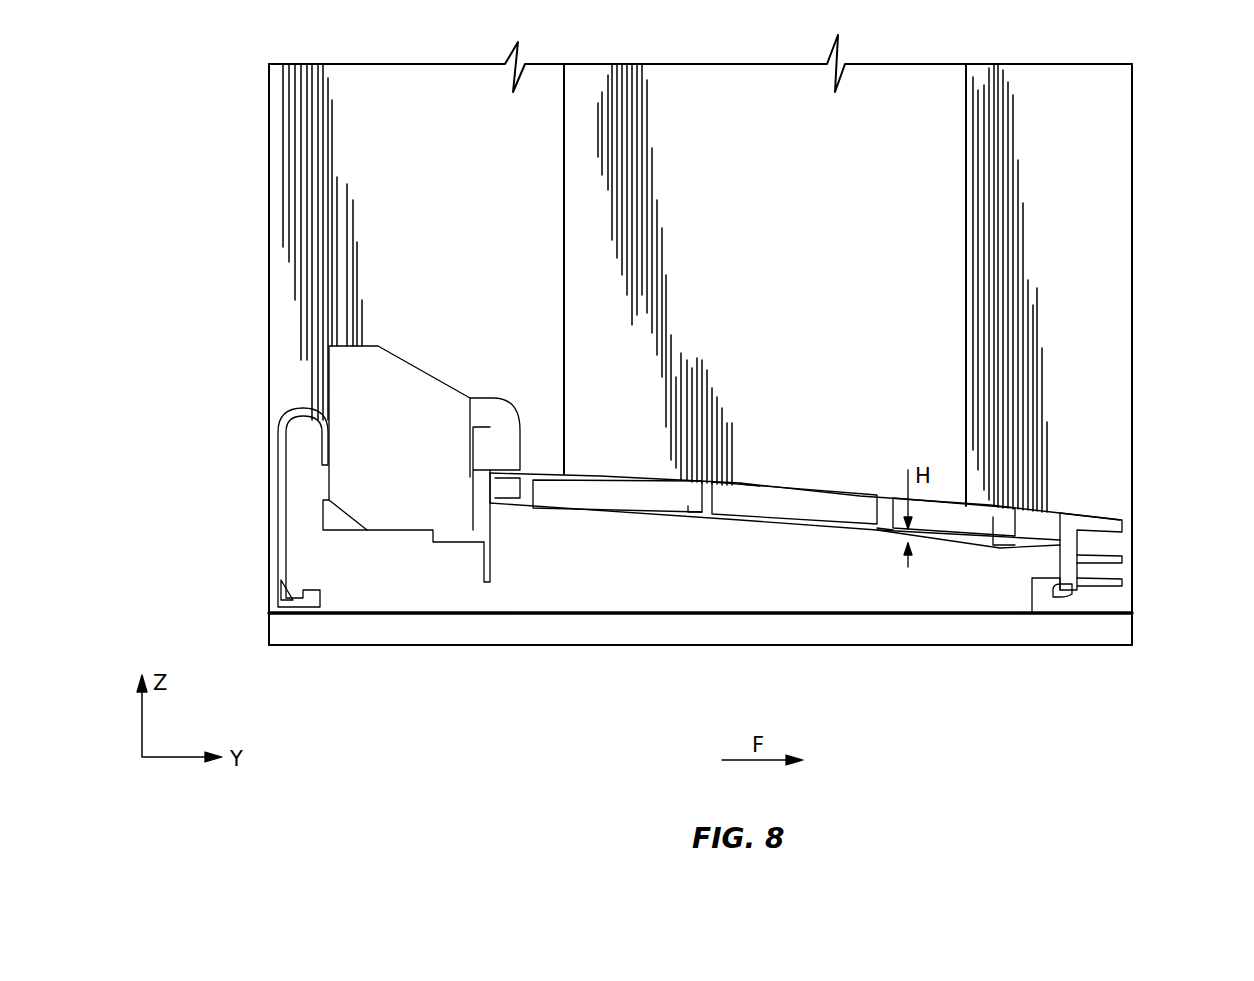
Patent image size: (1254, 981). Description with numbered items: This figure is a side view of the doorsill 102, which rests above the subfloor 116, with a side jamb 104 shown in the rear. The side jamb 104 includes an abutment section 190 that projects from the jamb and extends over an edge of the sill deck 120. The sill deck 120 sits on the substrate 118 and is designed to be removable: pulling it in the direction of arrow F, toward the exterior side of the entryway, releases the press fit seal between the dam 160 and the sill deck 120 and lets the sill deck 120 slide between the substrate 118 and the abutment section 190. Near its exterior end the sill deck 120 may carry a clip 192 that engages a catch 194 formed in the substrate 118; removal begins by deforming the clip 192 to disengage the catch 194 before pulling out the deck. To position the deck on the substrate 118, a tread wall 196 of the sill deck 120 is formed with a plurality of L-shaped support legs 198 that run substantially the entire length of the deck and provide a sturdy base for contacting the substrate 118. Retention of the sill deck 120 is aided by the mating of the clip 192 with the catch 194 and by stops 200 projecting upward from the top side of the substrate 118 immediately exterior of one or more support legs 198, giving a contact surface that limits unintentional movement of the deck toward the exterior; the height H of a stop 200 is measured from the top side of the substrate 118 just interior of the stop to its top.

The doorsill 102 is at (858, 653).
The side jamb 104 is at (320, 133).
The subfloor 116 is at (317, 632).
The substrate 118 is at (933, 590).
The sill deck 120 is at (602, 480).
The dam 160 is at (460, 535).
The abutment section 190 is at (886, 272).
The clip 192 is at (1066, 592).
The catch 194 is at (1047, 593).
The tread wall 196 is at (747, 497).
The support legs 198 is at (975, 546).
The stops 200 is at (893, 528).